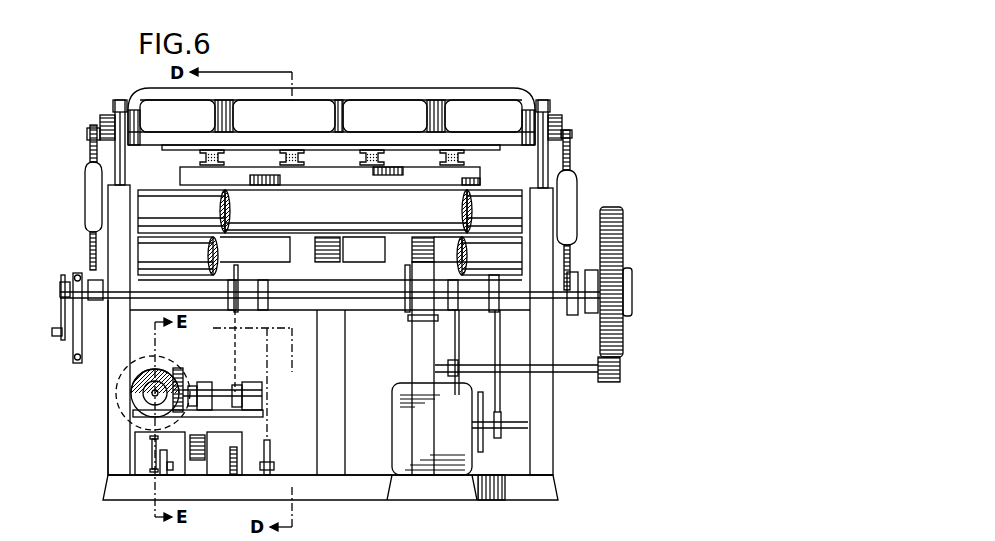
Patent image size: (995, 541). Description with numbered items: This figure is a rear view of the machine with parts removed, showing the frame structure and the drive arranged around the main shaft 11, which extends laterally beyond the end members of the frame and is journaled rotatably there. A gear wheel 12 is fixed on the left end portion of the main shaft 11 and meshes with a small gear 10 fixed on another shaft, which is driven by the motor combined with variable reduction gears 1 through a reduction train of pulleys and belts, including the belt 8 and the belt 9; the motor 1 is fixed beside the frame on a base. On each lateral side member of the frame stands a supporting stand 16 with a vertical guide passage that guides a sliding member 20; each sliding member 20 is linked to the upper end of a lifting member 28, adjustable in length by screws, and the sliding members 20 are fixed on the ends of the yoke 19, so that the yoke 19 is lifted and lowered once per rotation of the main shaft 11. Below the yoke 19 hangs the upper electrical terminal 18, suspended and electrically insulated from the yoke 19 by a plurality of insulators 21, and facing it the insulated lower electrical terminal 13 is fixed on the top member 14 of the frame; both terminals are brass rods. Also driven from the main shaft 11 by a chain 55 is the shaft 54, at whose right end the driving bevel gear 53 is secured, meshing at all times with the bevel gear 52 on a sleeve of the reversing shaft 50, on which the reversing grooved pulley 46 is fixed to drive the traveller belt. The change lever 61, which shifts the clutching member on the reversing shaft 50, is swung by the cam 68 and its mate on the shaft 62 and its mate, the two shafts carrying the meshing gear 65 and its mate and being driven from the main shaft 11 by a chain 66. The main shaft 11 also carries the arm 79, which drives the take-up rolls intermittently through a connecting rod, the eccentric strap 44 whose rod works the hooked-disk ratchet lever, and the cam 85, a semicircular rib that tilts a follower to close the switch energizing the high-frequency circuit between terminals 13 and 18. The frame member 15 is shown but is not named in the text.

The motor combined with variable reduction gears 1 is at (392, 421).
The belt 8 is at (498, 370).
The belt 9 is at (459, 368).
The small gear 10 is at (612, 382).
The main shaft 11 is at (60, 288).
The gear wheel 12 is at (622, 348).
The lower electrical terminal 13 is at (318, 230).
The top member of the frame 14 is at (345, 245).
The machine frame 15 is at (108, 450).
The supporting stand 16 is at (120, 100).
The upper electrical terminal 18 is at (292, 190).
The yoke 19 is at (368, 86).
The sliding member 20 is at (105, 115).
The insulator 21 is at (210, 150).
The lifting member 28 is at (85, 185).
The eccentric strap 44 is at (75, 276).
The reversing grooved pulley 46 is at (118, 412).
The reversing shaft 50 is at (155, 398).
The bevel gear 52 is at (163, 372).
The driving bevel gear 53 is at (180, 370).
The shaft 54 is at (224, 388).
The chain 55 is at (237, 372).
The change lever 61 is at (152, 455).
The shaft 62 is at (218, 468).
The gear 65 is at (233, 470).
The chain 66 is at (269, 372).
The cam 68 is at (165, 470).
The arm 79 is at (61, 318).
The cam 85 is at (96, 300).